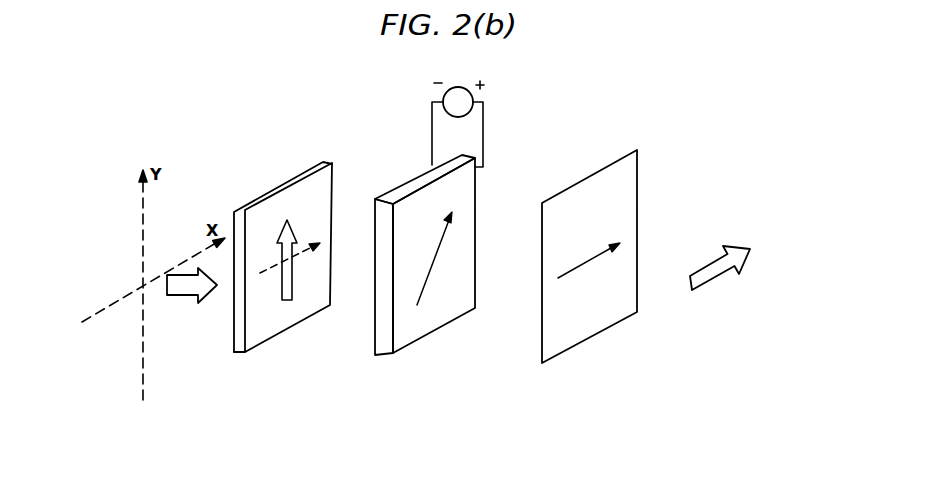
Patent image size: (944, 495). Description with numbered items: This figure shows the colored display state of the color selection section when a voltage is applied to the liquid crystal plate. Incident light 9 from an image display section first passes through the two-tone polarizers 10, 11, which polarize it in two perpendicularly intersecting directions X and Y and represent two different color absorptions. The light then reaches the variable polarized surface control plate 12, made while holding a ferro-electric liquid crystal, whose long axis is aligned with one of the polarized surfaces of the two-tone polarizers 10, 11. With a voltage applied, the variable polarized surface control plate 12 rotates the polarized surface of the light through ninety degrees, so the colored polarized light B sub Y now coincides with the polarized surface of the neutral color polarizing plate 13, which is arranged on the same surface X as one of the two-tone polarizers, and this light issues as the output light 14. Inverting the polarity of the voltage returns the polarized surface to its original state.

The incident light 9 is at (188, 288).
The two-tone polarizer 10 is at (275, 190).
The two-tone polarizer 11 is at (322, 195).
The variable polarized surface control plate 12 is at (467, 192).
The neutral color polarizing plate 13 is at (617, 302).
The output light 14 is at (712, 270).